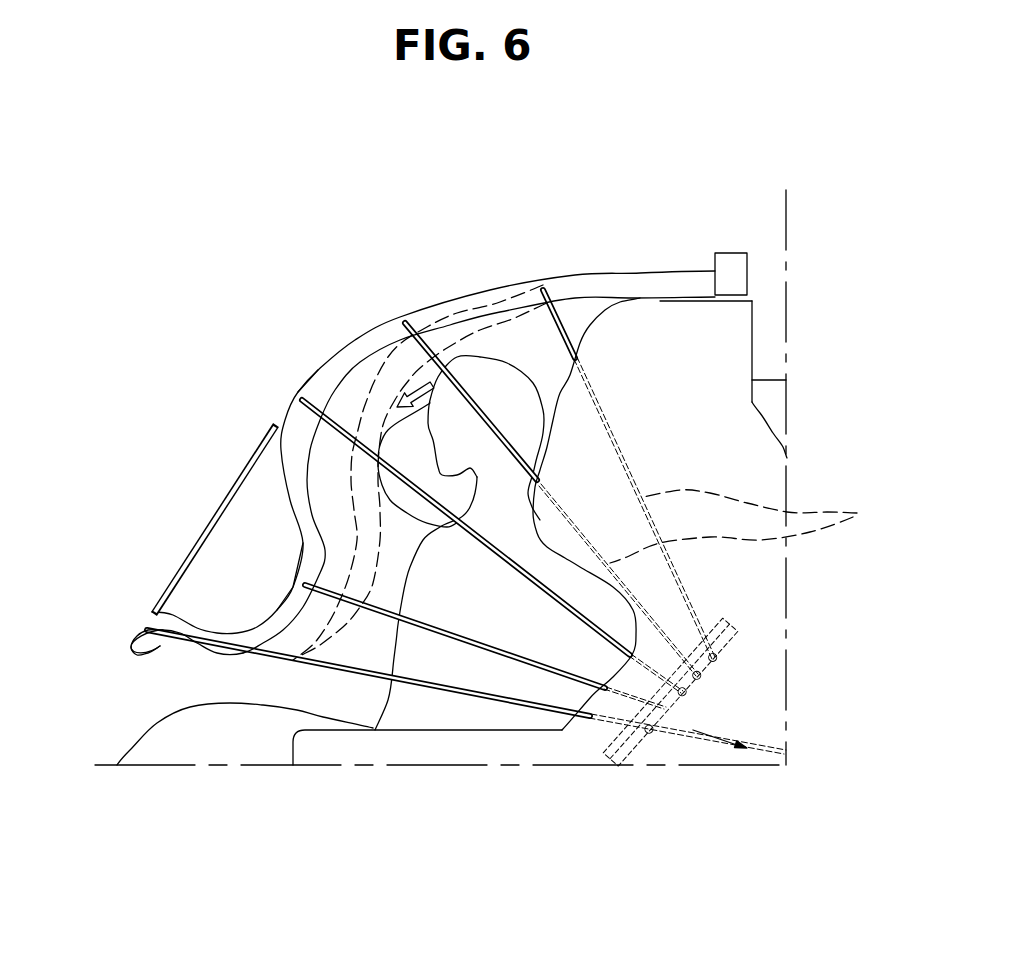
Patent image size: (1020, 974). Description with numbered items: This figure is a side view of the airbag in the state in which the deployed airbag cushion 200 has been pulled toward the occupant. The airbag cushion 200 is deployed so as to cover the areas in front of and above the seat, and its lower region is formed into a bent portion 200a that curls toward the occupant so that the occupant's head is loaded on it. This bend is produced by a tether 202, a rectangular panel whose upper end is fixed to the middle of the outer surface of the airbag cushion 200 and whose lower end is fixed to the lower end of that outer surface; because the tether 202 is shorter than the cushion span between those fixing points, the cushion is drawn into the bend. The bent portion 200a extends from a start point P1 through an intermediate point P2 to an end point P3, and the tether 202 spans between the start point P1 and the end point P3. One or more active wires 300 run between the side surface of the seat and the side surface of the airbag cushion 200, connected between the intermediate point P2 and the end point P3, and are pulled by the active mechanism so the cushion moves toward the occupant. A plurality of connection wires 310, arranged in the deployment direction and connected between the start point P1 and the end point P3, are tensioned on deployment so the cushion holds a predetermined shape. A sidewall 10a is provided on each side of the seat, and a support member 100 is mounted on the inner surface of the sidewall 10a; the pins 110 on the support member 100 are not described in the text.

The airbag cushion 200 is at (575, 270).
The bent portion 200a is at (270, 613).
The tether 202 is at (233, 502).
The start point P1 is at (305, 383).
The intermediate point P2 is at (295, 607).
The end point P3 is at (137, 637).
The connection wire 310 is at (425, 820).
The active wire 300 is at (465, 645).
The support member 100 is at (733, 640).
The pin 110 is at (727, 670).
The sidewall 10a is at (745, 708).